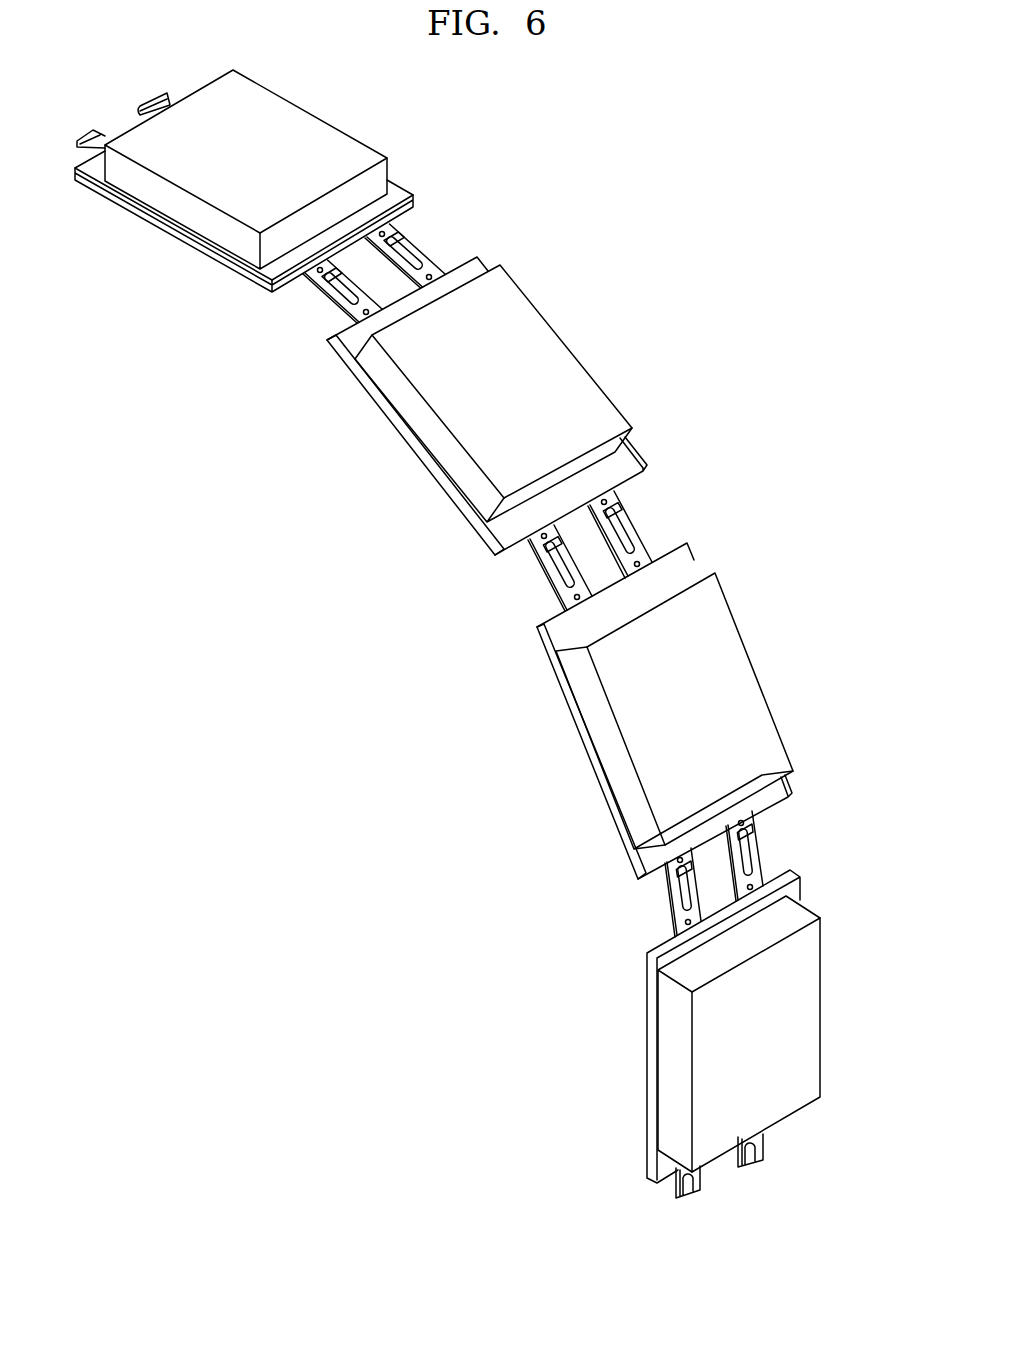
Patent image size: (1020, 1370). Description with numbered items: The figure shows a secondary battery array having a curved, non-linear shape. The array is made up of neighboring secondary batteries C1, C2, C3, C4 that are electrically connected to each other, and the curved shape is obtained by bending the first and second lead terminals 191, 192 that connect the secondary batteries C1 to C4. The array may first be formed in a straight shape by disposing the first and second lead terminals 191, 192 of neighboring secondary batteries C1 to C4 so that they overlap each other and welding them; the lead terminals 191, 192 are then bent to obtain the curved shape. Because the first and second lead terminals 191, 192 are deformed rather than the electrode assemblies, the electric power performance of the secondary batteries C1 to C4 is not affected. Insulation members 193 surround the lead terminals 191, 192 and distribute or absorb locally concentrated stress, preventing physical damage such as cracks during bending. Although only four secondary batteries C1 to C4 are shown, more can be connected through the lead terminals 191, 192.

The secondary battery C1 is at (326, 104).
The secondary battery C2 is at (583, 342).
The secondary battery C3 is at (768, 670).
The secondary battery C4 is at (833, 1015).
The first lead terminal 191 is at (400, 248).
The second lead terminal 192 is at (328, 285).
The insulation member 193 is at (428, 270).